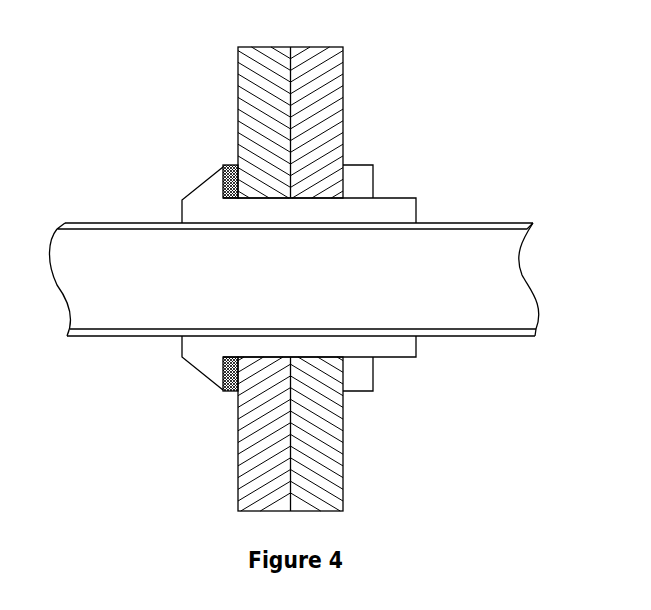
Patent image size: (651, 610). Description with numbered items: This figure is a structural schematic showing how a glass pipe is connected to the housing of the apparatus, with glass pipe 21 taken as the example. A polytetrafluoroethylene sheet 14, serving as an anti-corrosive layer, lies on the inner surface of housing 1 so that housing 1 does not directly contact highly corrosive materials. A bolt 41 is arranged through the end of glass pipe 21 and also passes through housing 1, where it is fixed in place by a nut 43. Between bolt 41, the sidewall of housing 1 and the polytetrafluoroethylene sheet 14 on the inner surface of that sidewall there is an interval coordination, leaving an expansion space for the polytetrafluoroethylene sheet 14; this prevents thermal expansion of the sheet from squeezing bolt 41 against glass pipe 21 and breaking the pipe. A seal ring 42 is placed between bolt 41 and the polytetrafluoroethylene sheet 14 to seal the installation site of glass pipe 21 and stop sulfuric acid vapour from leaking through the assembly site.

The housing 1 is at (324, 279).
The polytetrafluoroethylene sheet 14 is at (250, 112).
The glass pipe 21 is at (155, 222).
The bolt 41 is at (417, 202).
The seal ring 42 is at (232, 165).
The nut 43 is at (368, 176).